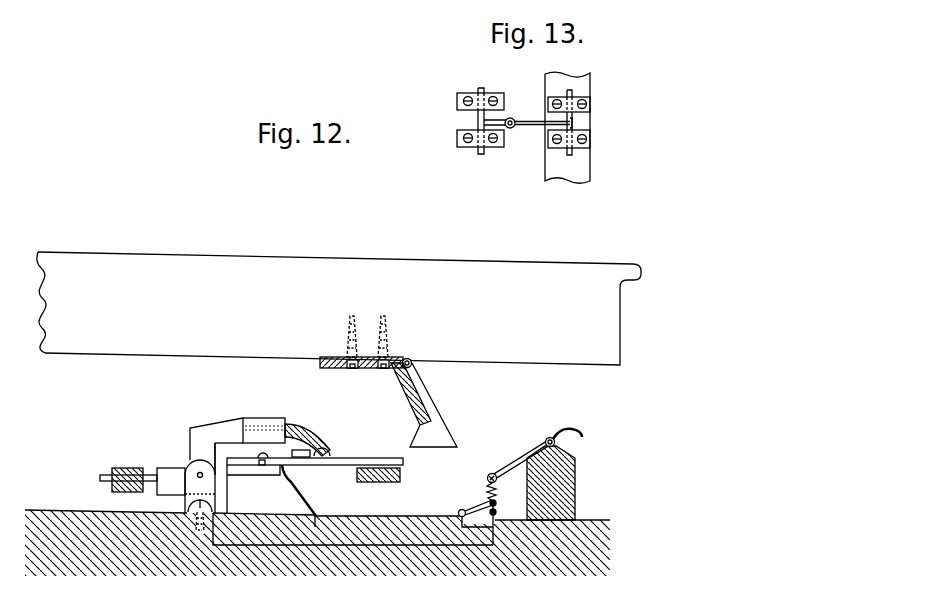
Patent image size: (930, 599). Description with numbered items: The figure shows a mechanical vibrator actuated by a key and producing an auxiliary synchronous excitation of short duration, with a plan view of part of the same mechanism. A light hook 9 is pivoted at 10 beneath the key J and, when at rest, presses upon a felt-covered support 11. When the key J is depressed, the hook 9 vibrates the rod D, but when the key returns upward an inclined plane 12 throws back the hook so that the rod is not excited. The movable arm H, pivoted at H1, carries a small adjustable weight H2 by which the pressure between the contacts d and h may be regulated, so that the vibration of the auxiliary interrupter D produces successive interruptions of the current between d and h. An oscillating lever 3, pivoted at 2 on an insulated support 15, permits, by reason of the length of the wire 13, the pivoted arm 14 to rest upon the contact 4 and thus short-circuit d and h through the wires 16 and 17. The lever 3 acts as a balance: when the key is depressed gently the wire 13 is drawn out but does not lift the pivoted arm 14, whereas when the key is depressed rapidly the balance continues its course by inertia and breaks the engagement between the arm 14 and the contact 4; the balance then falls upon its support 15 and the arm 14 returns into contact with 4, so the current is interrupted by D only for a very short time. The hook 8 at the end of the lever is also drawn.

In FIG. 12, the key J is at (360, 268).
In FIG. 12, the pivot 2 is at (548, 439).
In FIG. 13, the pivot 2 is at (572, 95).
In FIG. 12, the oscillating lever 3 is at (503, 471).
In FIG. 13, the oscillating lever 3 is at (521, 117).
In FIG. 12, the contact 4 is at (493, 546).
In FIG. 12, the hook 8 is at (581, 430).
In FIG. 13, the hook 8 is at (590, 126).
In FIG. 12, the hook 9 is at (442, 403).
In FIG. 12, the pivot 10 is at (412, 363).
In FIG. 12, the felt-covered support 11 is at (400, 388).
In FIG. 12, the inclined plane 12 is at (417, 438).
In FIG. 12, the wire 13 is at (488, 490).
In FIG. 13, the wire 13 is at (512, 130).
In FIG. 12, the pivoted arm 14 is at (490, 503).
In FIG. 13, the pivoted arm 14 is at (497, 118).
In FIG. 12, the insulated support 15 is at (560, 486).
In FIG. 12, the wire 16 is at (376, 527).
In FIG. 12, the wire 17 is at (307, 548).
In FIG. 12, the movable arm H is at (219, 420).
In FIG. 12, the pivot of movable arm H1 is at (198, 473).
In FIG. 12, the adjustable weight H2 is at (122, 467).
In FIG. 12, the contact h is at (303, 426).
In FIG. 12, the contact d is at (331, 454).
In FIG. 12, the rod D is at (265, 476).